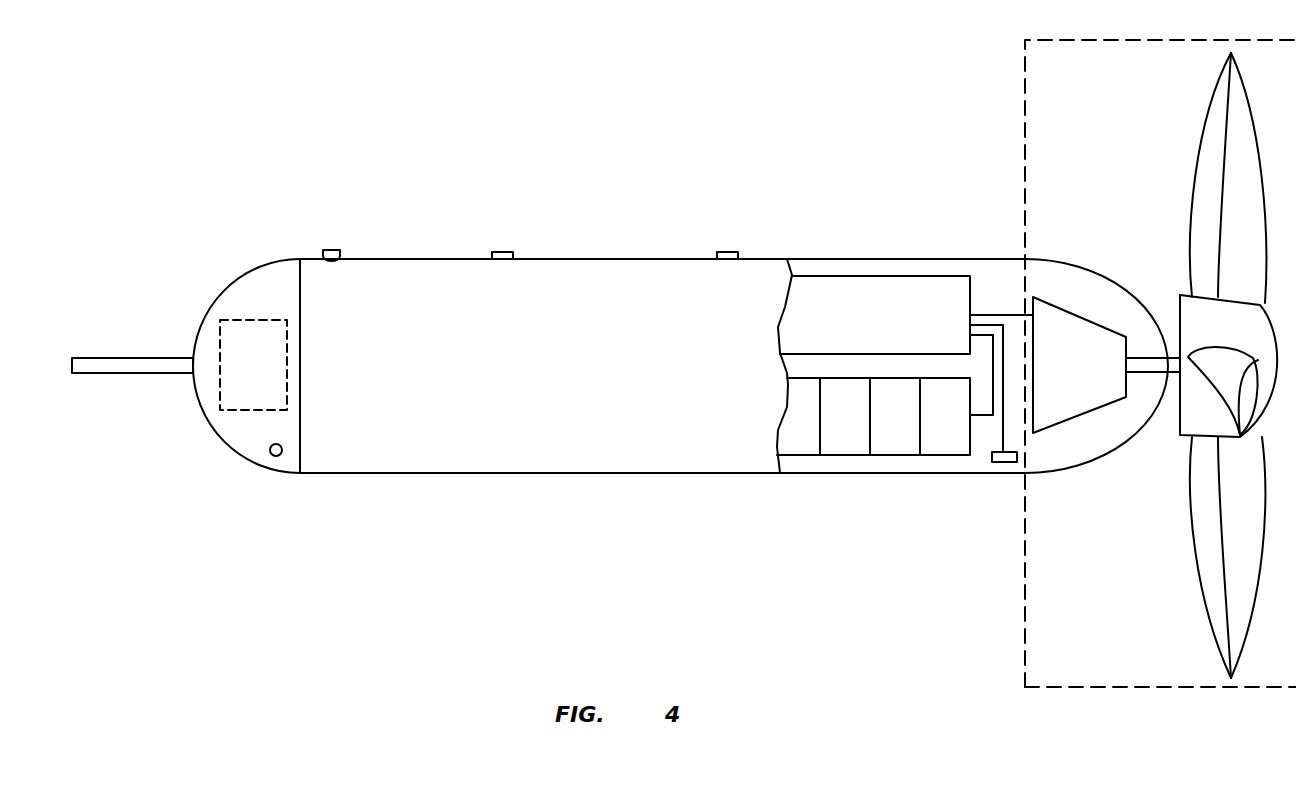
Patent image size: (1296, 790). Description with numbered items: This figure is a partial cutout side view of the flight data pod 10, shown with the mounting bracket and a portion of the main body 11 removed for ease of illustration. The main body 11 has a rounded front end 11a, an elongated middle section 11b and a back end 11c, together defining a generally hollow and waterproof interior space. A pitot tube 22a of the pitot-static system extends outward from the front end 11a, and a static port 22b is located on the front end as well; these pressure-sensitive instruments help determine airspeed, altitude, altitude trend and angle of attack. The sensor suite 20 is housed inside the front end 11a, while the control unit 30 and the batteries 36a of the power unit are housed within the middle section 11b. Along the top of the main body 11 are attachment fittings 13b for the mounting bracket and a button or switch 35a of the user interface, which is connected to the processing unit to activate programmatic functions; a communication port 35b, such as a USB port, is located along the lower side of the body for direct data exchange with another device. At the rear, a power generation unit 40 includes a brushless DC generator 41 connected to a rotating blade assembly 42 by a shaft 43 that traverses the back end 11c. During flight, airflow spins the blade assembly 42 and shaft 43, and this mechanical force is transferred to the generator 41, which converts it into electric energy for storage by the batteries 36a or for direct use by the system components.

The flight data pod 10 is at (230, 126).
The main body 11 is at (636, 371).
The front end 11a is at (252, 290).
The middle section 11b is at (524, 425).
The back end 11c is at (1118, 293).
The attachment fittings 13b is at (498, 250).
The sensor suite 20 is at (240, 350).
The pitot tube 22a is at (98, 358).
The static port 22b is at (275, 458).
The control unit 30 is at (889, 329).
The buttons/switches 35a is at (330, 250).
The communication ports 35b is at (1005, 463).
The batteries 36a is at (840, 430).
The power generation unit 40 is at (1025, 93).
The brushless DC generator 41 is at (1098, 381).
The rotating blade assembly 42 is at (1207, 153).
The shaft 43 is at (1148, 367).